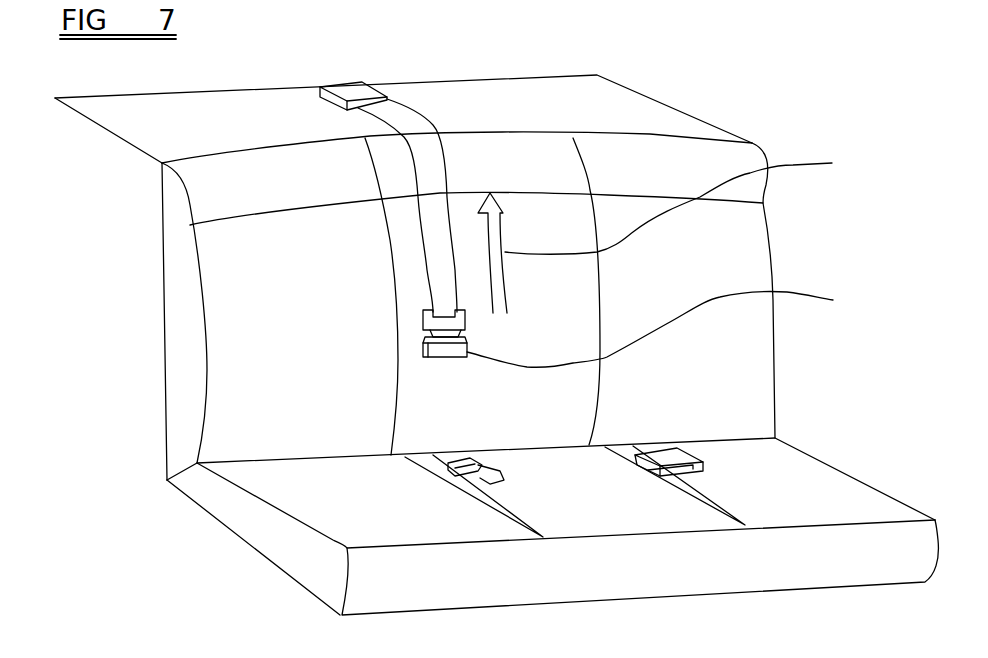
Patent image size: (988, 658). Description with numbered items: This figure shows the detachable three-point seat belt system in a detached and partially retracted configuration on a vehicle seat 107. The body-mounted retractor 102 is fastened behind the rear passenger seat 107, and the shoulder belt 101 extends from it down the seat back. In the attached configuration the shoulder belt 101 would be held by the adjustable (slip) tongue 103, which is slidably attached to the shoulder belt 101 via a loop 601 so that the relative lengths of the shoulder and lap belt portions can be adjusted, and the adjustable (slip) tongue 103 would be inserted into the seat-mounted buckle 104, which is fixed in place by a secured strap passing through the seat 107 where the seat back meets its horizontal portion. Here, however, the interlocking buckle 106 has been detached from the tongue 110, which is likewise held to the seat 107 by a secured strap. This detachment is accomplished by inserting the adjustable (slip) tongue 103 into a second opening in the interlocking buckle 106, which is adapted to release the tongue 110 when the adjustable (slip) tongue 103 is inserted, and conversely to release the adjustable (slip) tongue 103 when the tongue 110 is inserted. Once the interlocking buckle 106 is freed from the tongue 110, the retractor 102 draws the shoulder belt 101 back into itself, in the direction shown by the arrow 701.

The shoulder belt 101 is at (435, 233).
The body-mounted retractor 102 is at (355, 90).
The adjustable (slip) tongue 103 is at (423, 338).
The buckle 104 is at (670, 453).
The interlocking buckle 106 is at (668, 330).
The seat 107 is at (695, 252).
The tongue 110 is at (450, 453).
The loop 601 is at (423, 316).
The arrow 701 is at (675, 233).